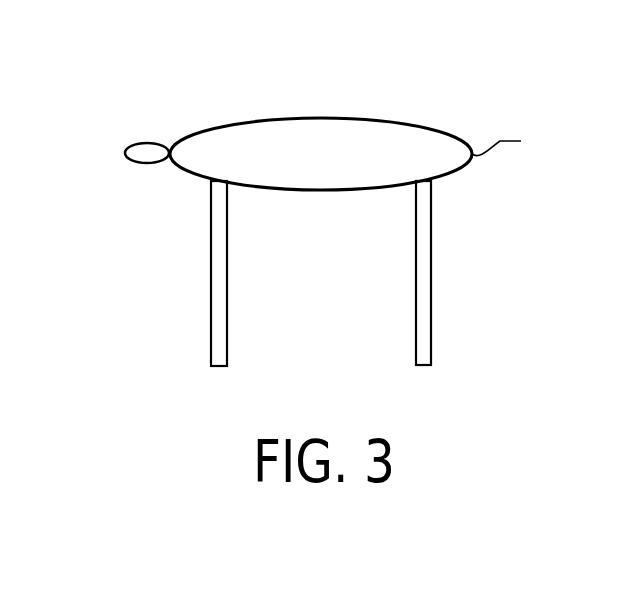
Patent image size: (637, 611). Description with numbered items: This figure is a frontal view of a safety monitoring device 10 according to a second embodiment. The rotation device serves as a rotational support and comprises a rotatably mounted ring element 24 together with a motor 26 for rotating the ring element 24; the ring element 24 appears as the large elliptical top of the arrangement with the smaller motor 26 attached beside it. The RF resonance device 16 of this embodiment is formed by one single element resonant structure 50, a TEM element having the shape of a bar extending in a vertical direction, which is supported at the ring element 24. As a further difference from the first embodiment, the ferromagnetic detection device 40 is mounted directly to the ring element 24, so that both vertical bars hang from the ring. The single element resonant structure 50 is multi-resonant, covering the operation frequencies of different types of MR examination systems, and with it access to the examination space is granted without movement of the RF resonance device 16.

The safety monitoring device 10 is at (444, 97).
The ring element 24 is at (515, 141).
The motor 26 is at (125, 153).
The RF resonance device 16 is at (328, 273).
The ferromagnetic detection device 40 is at (211, 277).
The single element resonant structure 50 is at (431, 277).